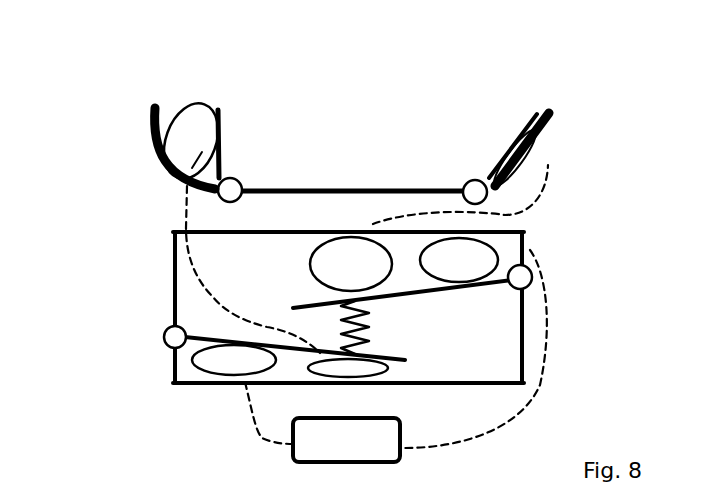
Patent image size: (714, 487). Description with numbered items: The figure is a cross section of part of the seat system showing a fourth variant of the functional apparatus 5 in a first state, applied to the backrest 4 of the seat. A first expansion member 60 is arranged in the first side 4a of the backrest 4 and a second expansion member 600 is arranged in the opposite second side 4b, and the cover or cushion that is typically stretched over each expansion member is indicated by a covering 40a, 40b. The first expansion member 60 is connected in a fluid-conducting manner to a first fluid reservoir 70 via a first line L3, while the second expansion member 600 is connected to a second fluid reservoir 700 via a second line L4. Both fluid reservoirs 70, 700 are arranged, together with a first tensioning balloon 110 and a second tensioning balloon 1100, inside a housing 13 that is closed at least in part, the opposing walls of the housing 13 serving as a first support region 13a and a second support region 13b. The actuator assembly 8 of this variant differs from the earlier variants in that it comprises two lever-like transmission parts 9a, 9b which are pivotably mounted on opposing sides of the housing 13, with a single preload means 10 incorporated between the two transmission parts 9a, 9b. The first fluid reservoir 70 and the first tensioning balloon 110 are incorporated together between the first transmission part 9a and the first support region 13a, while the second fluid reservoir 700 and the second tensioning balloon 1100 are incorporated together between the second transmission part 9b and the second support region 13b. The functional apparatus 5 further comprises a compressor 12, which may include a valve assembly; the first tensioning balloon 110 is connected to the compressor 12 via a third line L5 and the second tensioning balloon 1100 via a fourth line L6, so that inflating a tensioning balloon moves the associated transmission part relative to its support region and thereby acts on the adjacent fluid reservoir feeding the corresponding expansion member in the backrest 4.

The backrest 4 is at (350, 90).
The functional apparatus 5 is at (140, 70).
The first side 4a is at (553, 152).
The second side 4b is at (152, 155).
The covering 40a is at (541, 112).
The covering 40b is at (220, 123).
The first expansion member 60 is at (197, 104).
The second expansion member 600 is at (505, 150).
The actuator assembly 8 is at (556, 378).
The first transmission part 9a is at (443, 290).
The second transmission part 9b is at (253, 347).
The preload means 10 is at (372, 326).
The compressor 12 is at (362, 450).
The housing 13 is at (175, 305).
The first support region 13a is at (302, 224).
The second support region 13b is at (297, 388).
The first fluid reservoir 70 is at (320, 262).
The first tensioning balloon 110 is at (483, 252).
The second fluid reservoir 700 is at (351, 375).
The second tensioning balloon 1100 is at (195, 376).
The first line L3 is at (185, 200).
The second line L4 is at (548, 195).
The third line L5 is at (548, 320).
The fourth line L6 is at (252, 420).